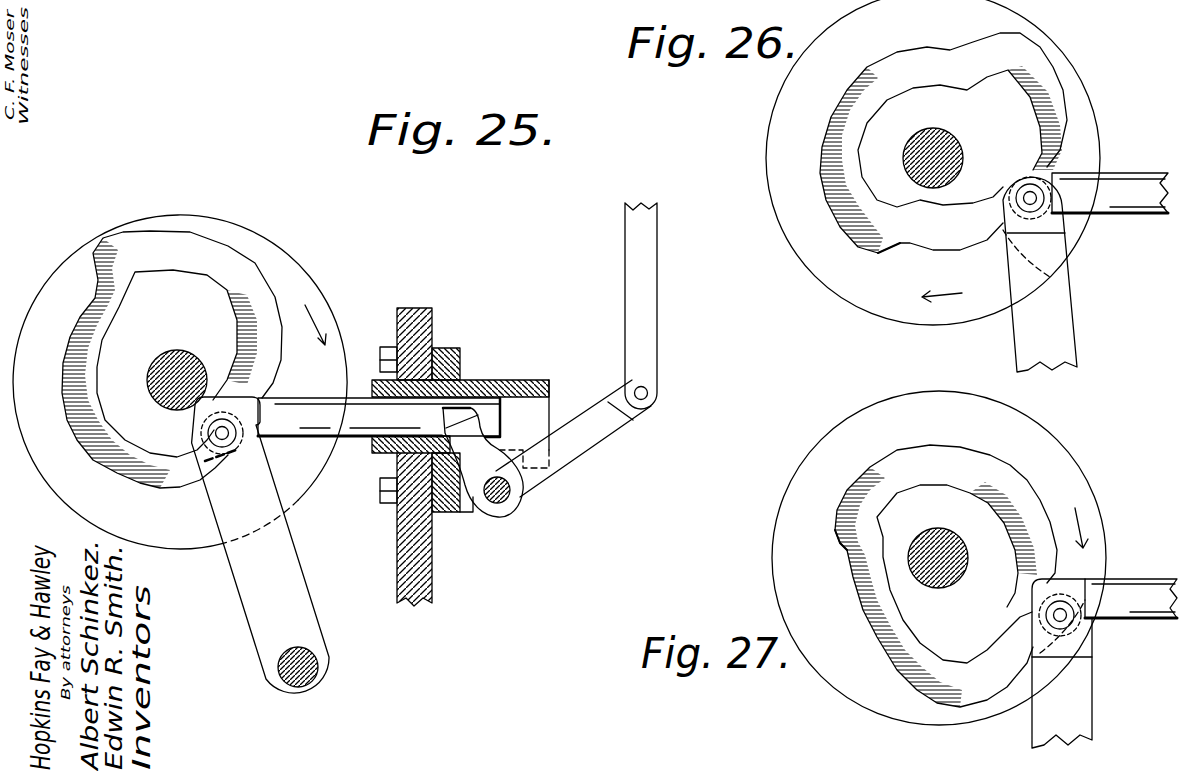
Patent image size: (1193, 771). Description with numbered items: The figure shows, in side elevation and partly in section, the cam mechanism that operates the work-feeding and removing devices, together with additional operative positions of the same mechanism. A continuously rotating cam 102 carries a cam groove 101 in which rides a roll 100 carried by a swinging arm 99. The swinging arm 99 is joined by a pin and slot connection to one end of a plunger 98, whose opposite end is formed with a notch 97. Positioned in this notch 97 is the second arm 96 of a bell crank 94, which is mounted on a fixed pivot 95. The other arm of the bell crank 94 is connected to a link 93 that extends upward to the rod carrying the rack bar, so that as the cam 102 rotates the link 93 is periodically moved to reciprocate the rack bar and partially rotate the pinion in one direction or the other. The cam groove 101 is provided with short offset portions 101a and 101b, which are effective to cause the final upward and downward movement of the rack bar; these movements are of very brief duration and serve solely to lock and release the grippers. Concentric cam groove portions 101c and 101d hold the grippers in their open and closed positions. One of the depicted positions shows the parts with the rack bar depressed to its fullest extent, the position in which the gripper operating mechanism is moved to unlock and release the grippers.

In FIG. 25, the link 93 is at (648, 252).
In FIG. 25, the bell crank 94 is at (596, 468).
In FIG. 25, the fixed pivot 95 is at (501, 497).
In FIG. 25, the second arm 96 is at (490, 447).
In FIG. 25, the notch 97 is at (460, 413).
In FIG. 25, the plunger 98 is at (364, 412).
In FIG. 26, the plunger 98 is at (1132, 183).
In FIG. 27, the plunger 98 is at (1138, 578).
In FIG. 25, the swinging arm 99 is at (283, 538).
In FIG. 26, the swinging arm 99 is at (1062, 318).
In FIG. 27, the swinging arm 99 is at (1082, 696).
In FIG. 25, the roll 100 is at (196, 469).
In FIG. 26, the roll 100 is at (1022, 247).
In FIG. 27, the roll 100 is at (1095, 624).
In FIG. 25, the cam groove 101 is at (118, 443).
In FIG. 26, the cam groove 101 is at (950, 138).
In FIG. 27, the cam groove 101 is at (873, 617).
In FIG. 26, the short offset portion 101a is at (917, 260).
In FIG. 27, the short offset portion 101a is at (840, 553).
In FIG. 25, the short offset portion 101b is at (163, 353).
In FIG. 26, the short offset portion 101b is at (1022, 62).
In FIG. 26, the concentric cam groove portion 101c is at (824, 160).
In FIG. 27, the concentric cam groove portion 101c is at (933, 452).
In FIG. 26, the concentric cam groove portion 101d is at (1072, 120).
In FIG. 27, the concentric cam groove portion 101d is at (1010, 688).
In FIG. 25, the cam 102 is at (206, 536).
In FIG. 26, the cam 102 is at (768, 140).
In FIG. 27, the cam 102 is at (802, 478).